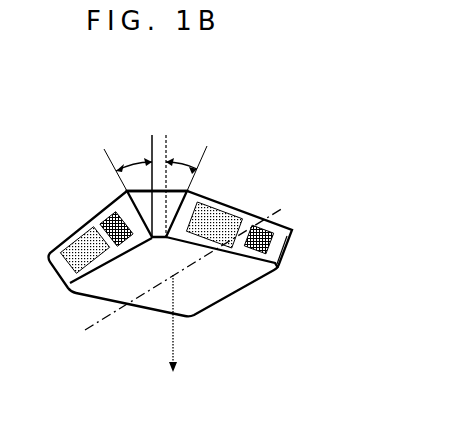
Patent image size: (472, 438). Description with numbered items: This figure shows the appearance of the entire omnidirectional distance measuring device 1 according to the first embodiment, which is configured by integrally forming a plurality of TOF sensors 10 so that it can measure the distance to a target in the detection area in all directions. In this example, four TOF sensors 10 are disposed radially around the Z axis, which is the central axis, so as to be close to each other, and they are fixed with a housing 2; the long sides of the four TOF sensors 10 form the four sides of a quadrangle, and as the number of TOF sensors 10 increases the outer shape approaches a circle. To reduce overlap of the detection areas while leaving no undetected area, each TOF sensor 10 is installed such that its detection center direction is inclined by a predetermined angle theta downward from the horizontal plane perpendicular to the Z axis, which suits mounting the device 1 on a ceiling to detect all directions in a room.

The omnidirectional distance measuring device 1 is at (284, 85).
The housing 2 is at (228, 285).
The TOF sensor 10 is at (95, 230).